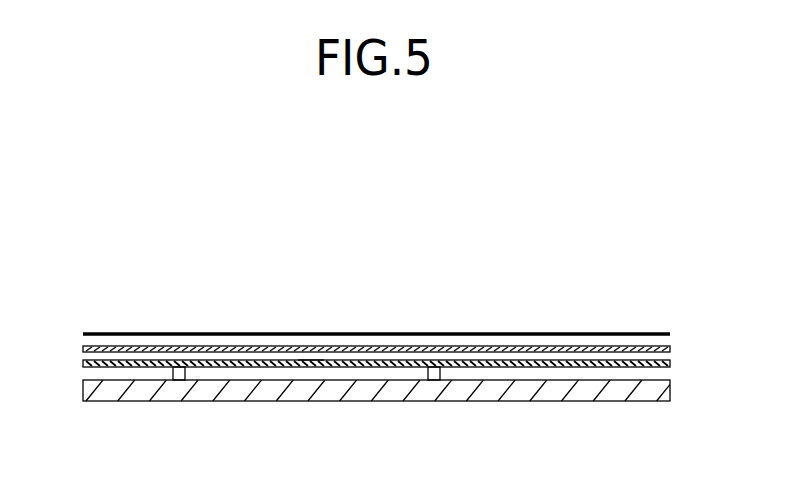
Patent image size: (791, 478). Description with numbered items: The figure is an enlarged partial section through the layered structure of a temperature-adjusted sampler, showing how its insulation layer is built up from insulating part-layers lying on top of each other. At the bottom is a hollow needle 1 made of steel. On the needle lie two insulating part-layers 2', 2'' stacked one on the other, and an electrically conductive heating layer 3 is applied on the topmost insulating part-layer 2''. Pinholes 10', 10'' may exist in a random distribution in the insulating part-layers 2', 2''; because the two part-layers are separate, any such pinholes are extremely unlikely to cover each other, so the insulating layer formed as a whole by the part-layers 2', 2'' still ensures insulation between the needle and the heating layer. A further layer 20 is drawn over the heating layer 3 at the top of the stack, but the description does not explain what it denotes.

The hollow needle 1 is at (503, 397).
The insulating part-layer 2' is at (456, 385).
The insulating part-layer 2'' is at (420, 345).
The heating layer 3 is at (83, 349).
The pinhole 10' is at (429, 326).
The pinhole 10'' is at (295, 317).
The cover layer 20 is at (568, 333).